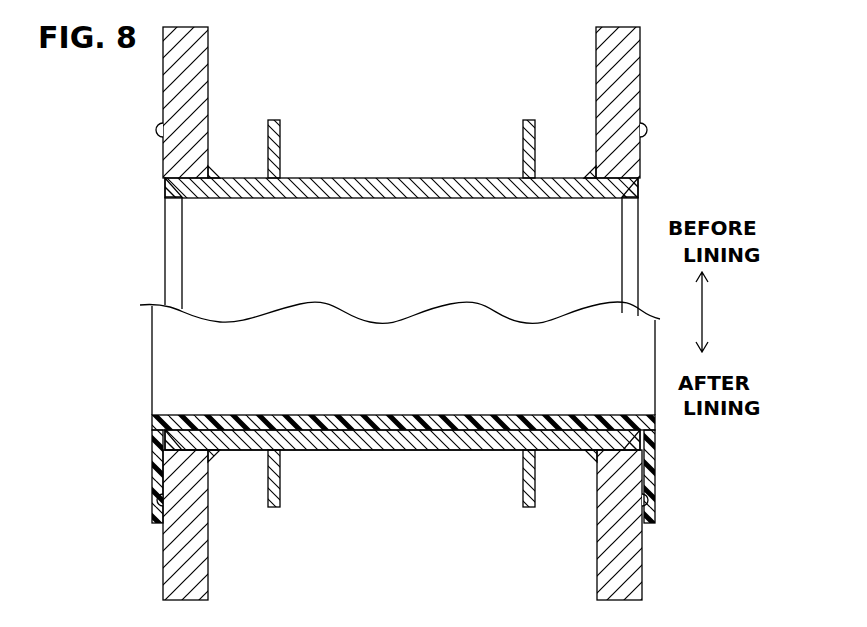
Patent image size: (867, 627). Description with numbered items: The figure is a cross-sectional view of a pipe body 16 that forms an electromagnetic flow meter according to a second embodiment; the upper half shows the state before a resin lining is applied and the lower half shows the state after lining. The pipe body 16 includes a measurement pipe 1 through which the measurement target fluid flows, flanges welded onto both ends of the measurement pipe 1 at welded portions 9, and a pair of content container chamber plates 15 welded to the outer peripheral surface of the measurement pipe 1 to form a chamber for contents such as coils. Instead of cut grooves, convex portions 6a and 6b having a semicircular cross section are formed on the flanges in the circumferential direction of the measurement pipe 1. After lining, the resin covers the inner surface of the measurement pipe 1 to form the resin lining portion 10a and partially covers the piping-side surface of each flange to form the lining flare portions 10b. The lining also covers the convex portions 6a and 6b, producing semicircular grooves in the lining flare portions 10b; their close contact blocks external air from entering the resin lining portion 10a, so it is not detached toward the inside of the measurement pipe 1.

The measurement pipe 1 is at (437, 178).
The convex portion 6a is at (648, 128).
The convex portion 6b is at (157, 124).
The welded portion 9 is at (214, 172).
The resin lining portion 10a is at (437, 422).
The lining flare portion 10b is at (655, 455).
The content container chamber plate 15 is at (274, 118).
The pipe body 16 is at (372, 448).